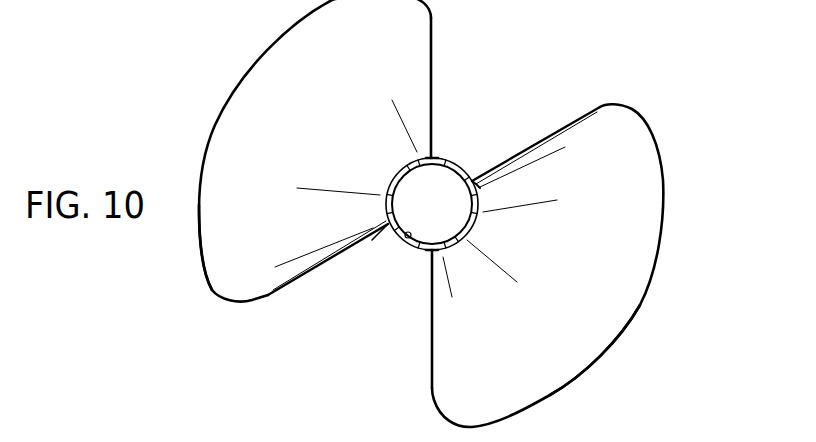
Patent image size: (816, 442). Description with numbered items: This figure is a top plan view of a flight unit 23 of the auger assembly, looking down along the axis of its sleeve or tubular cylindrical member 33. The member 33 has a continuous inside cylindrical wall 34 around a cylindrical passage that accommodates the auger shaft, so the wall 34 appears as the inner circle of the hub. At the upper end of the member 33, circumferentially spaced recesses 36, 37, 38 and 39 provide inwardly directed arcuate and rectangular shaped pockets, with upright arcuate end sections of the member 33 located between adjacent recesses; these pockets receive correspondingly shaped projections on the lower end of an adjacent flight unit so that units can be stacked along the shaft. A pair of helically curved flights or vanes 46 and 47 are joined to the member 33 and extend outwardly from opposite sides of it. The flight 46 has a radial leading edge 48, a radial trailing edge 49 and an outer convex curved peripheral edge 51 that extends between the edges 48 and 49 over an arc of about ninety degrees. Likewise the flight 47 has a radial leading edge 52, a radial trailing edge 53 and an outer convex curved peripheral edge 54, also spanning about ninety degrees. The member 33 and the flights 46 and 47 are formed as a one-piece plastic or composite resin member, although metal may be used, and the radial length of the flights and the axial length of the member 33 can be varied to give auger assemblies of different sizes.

The flight unit 23 is at (442, 213).
The tubular cylindrical member 33 is at (405, 160).
The inside cylindrical wall 34 is at (397, 236).
The recess 36 is at (372, 240).
The recess 37 is at (434, 158).
The recess 38 is at (497, 170).
The recess 39 is at (420, 252).
The flight 46 is at (205, 138).
The flight 47 is at (652, 288).
The radial leading edge 48 is at (432, 60).
The radial trailing edge 49 is at (303, 281).
The outer convex curved peripheral edge 51 is at (200, 222).
The radial leading edge 52 is at (428, 370).
The radial trailing edge 53 is at (560, 127).
The outer convex curved peripheral edge 54 is at (612, 343).